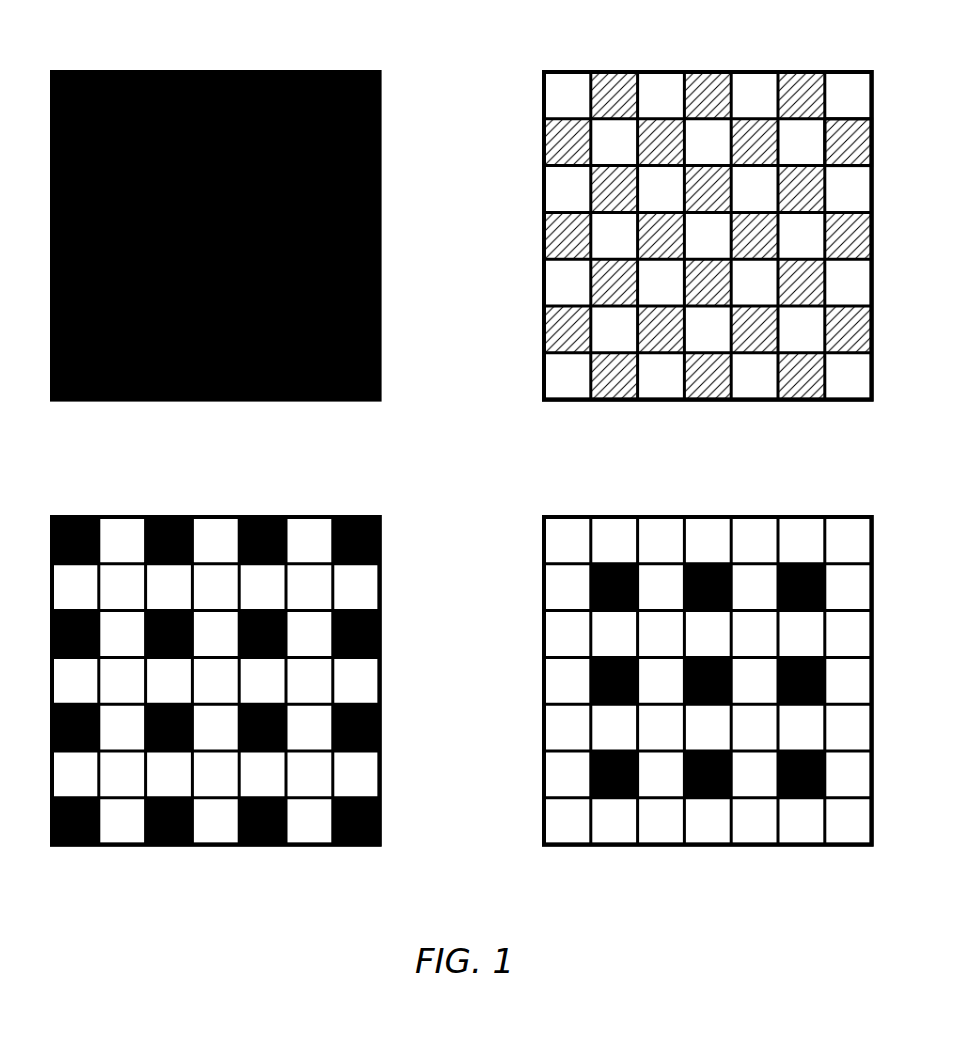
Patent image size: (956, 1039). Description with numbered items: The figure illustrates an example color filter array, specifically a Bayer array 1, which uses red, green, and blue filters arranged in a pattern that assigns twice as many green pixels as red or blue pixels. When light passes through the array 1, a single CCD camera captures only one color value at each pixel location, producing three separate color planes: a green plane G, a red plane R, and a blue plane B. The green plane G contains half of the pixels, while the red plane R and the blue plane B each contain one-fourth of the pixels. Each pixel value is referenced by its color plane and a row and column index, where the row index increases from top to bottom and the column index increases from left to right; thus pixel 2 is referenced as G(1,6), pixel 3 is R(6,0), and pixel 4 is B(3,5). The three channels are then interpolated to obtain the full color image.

The Bayer array 1 is at (330, 410).
The pixel G(1,6) 2 is at (855, 166).
The pixel R(6,0) 3 is at (80, 837).
The pixel B(3,5) 4 is at (817, 686).
The green plane G is at (777, 410).
The red plane R is at (283, 855).
The blue plane B is at (777, 855).